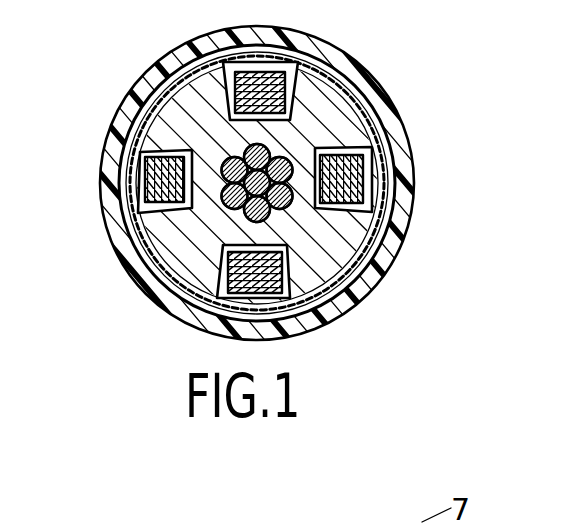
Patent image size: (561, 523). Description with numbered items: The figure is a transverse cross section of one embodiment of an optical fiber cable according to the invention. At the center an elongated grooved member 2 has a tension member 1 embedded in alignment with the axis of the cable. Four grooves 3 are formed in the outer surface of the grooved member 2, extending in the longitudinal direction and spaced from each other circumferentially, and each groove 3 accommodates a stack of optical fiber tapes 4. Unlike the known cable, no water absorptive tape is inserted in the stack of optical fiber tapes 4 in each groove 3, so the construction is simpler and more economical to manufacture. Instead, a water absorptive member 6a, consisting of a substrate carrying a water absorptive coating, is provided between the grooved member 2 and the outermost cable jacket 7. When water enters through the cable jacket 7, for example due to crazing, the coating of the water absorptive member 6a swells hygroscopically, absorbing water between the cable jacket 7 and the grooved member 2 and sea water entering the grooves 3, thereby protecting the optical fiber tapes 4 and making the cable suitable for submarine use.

The tension member 1 is at (284, 204).
The grooved member 2 is at (132, 100).
The grooves 3 is at (330, 282).
The optical fiber tapes 4 is at (386, 131).
The water absorptive member 6a is at (114, 251).
The cable jacket 7 is at (378, 92).